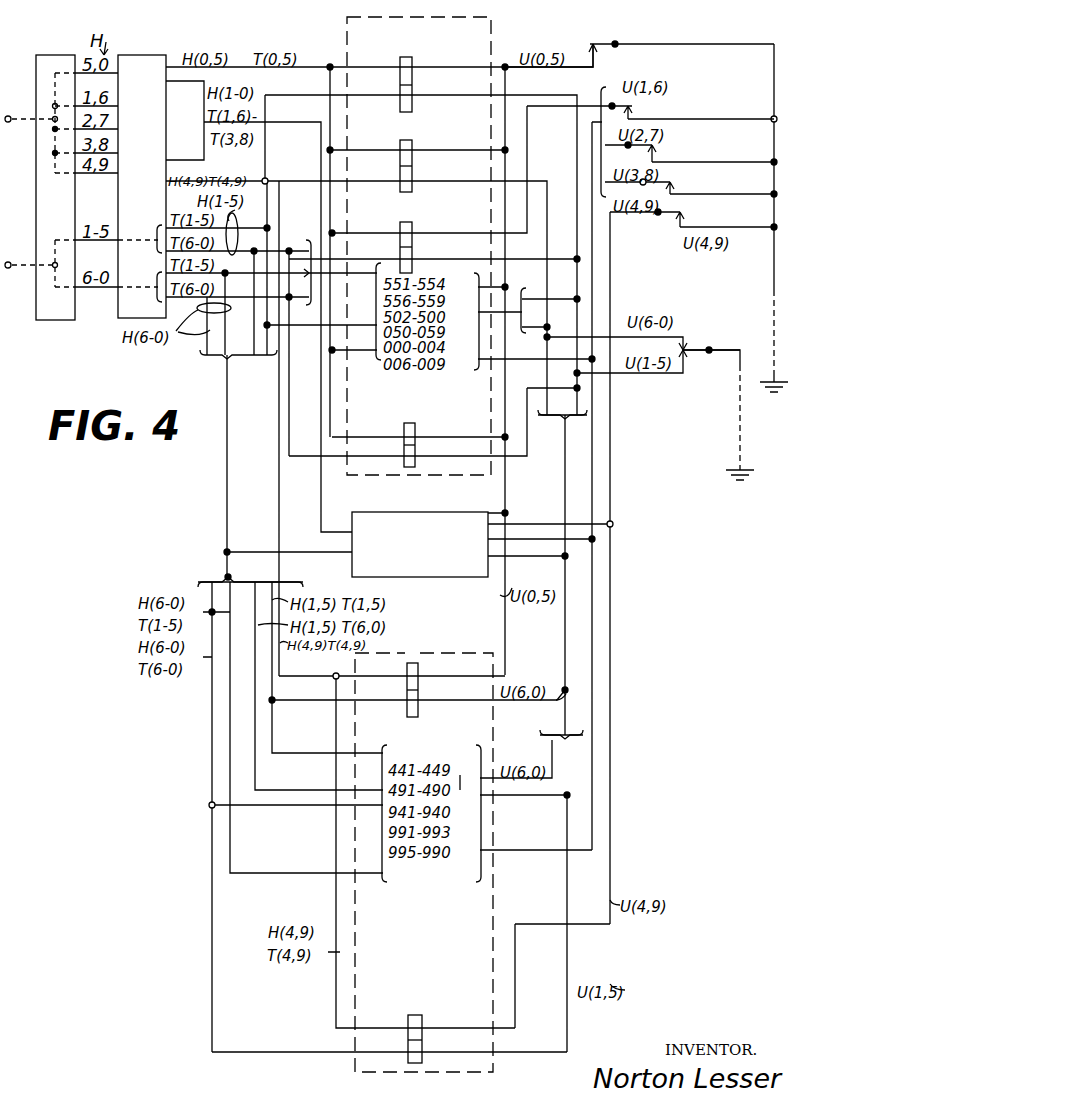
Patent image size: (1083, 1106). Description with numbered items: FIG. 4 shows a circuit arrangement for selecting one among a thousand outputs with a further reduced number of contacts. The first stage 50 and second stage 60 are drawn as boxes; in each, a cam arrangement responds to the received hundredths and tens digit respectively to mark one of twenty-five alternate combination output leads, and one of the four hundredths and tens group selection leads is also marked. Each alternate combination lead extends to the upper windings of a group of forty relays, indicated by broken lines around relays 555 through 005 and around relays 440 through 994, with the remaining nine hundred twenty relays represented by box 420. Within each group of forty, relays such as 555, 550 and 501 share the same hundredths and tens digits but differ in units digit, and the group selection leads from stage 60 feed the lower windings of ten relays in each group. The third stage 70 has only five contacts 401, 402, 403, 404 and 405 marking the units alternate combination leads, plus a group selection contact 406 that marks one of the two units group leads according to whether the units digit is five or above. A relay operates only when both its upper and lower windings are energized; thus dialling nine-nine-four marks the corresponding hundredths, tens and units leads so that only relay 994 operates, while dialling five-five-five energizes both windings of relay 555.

The first stage 50 is at (56, 175).
The second stage 60 is at (136, 53).
The third stage 70 is at (615, 41).
The contact 401 is at (610, 60).
The contact 402 is at (636, 112).
The contact 403 is at (658, 153).
The contact 404 is at (672, 186).
The contact 405 is at (680, 220).
The group selection contact 406 is at (690, 345).
The relay 555 is at (406, 64).
The relay 550 is at (406, 146).
The relay 501 is at (406, 228).
The relay 005 is at (409, 428).
The box of remaining relays 420 is at (462, 511).
The relay 440 is at (412, 668).
The relay 994 is at (414, 1022).